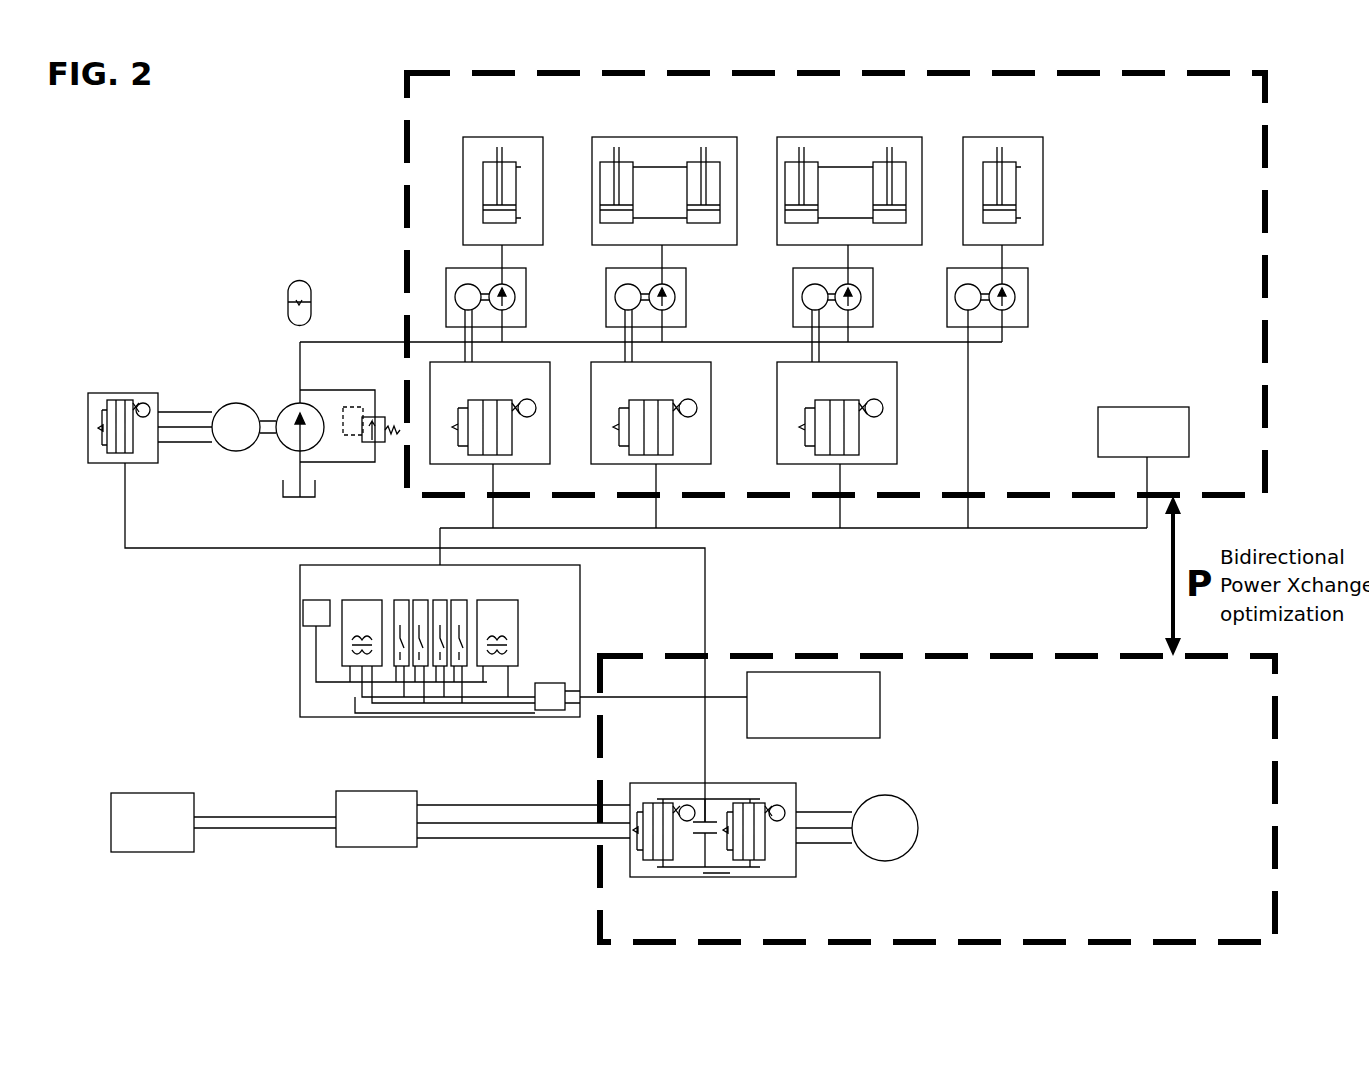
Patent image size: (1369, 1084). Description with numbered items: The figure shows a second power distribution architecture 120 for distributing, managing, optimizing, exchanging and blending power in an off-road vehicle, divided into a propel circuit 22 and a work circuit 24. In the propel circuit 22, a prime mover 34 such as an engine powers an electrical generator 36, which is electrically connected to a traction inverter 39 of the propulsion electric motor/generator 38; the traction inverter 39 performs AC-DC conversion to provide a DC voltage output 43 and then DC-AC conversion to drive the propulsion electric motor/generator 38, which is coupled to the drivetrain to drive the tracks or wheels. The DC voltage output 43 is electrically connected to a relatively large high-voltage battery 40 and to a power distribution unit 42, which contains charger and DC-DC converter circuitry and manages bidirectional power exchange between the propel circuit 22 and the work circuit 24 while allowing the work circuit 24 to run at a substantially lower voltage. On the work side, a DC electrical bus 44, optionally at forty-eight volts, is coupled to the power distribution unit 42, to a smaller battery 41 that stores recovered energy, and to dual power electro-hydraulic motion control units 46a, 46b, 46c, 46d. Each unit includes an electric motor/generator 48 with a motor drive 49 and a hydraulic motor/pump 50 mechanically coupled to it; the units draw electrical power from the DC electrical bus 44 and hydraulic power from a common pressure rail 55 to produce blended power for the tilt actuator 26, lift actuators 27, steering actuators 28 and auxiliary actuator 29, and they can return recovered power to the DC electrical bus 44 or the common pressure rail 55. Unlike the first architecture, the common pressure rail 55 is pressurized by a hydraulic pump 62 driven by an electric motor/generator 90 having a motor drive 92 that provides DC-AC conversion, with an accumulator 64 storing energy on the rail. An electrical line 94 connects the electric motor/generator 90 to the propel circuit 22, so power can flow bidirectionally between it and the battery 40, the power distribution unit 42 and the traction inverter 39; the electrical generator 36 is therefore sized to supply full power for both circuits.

The second power distribution architecture 120 is at (322, 118).
The work circuit 24 is at (1268, 158).
The propel circuit 22 is at (1278, 704).
The actuator 26 is at (503, 155).
The actuators 27 is at (620, 155).
The actuators 28 is at (805, 155).
The actuator 29 is at (1003, 155).
The dual power electro-hydraulic motion control unit 46a is at (446, 275).
The dual power electro-hydraulic motion control unit 46b is at (606, 288).
The dual power electro-hydraulic motion control unit 46c is at (793, 290).
The dual power electro-hydraulic motion control unit 46d is at (947, 290).
The electric motor/generator 48 is at (450, 306).
The hydraulic motor/pump 50 is at (512, 292).
The motor drive 49 is at (525, 466).
The common pressure rail 55 is at (345, 343).
The DC electrical bus 44 is at (948, 530).
The battery 41 is at (1135, 407).
The electrical line 94 is at (705, 589).
The DC voltage output 43 is at (705, 630).
The power distribution unit 42 is at (590, 612).
The battery 40 is at (853, 672).
The traction inverter 39 is at (630, 783).
The propulsion electric motor/generator 38 is at (850, 886).
The prime mover 34 is at (131, 793).
The electrical generator 36 is at (372, 847).
The electric motor/generator 90 is at (176, 376).
The motor drive 92 is at (110, 393).
The hydraulic pump 62 is at (286, 415).
The accumulator 64 is at (287, 300).